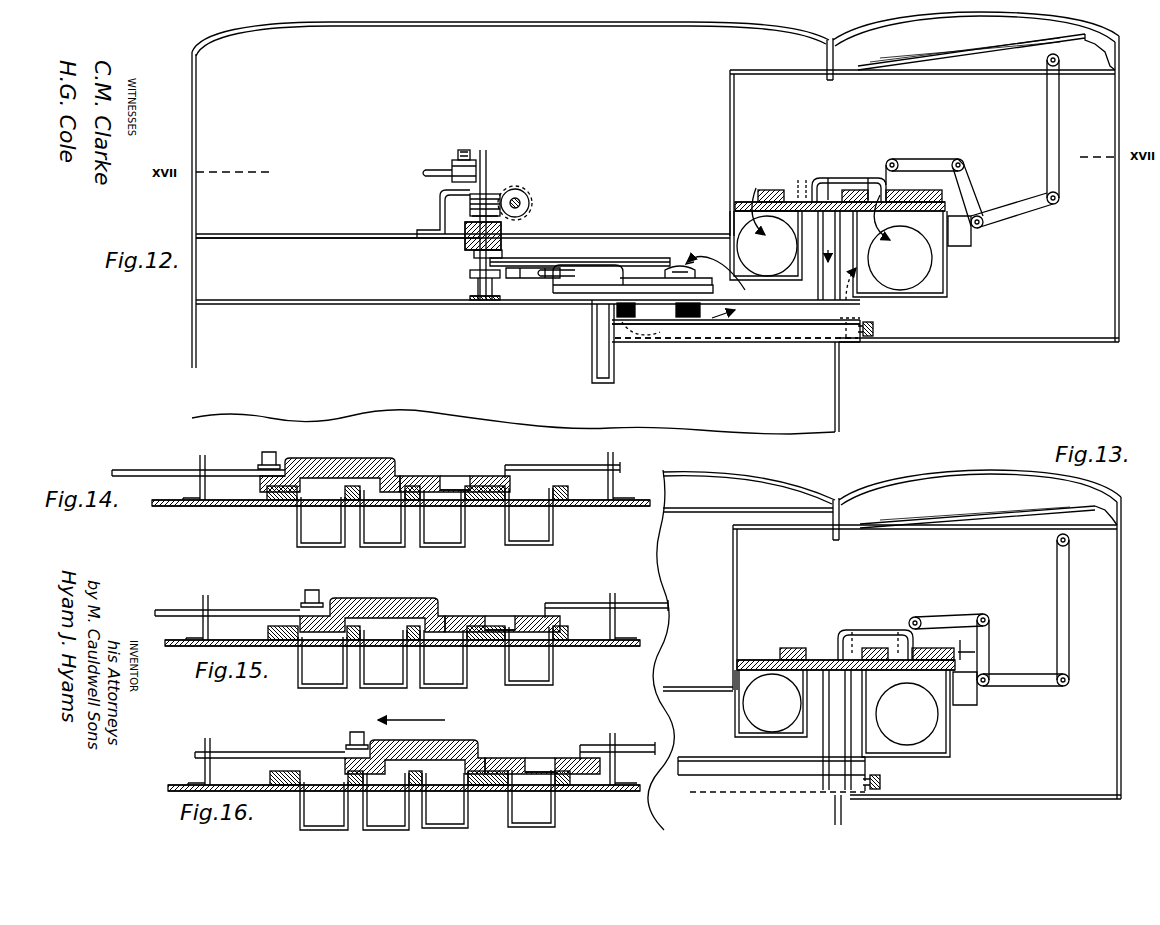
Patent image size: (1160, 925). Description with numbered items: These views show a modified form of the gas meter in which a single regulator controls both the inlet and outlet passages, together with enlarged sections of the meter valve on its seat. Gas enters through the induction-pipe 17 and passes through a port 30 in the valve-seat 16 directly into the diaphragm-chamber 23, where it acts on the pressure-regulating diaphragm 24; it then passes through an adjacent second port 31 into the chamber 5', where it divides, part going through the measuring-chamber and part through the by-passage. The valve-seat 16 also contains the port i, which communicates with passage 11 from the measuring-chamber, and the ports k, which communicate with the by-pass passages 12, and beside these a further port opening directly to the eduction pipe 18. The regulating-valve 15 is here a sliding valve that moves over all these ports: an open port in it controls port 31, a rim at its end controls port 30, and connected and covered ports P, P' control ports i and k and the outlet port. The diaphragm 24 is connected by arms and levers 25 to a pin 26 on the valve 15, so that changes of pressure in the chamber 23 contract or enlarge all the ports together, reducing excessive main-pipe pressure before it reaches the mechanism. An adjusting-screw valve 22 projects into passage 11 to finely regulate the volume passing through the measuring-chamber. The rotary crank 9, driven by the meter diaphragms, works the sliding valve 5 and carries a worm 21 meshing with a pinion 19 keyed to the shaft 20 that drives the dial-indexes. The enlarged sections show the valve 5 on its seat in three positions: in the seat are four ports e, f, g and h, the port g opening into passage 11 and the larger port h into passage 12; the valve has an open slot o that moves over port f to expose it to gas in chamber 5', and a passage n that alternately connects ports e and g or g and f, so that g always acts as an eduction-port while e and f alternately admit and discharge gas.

In FIG. 12, the sliding valve 5 is at (641, 274).
In FIG. 12, the chamber 5' is at (338, 257).
In FIG. 12, the rotary crank 9 is at (529, 282).
In FIG. 12, the passage 11 is at (713, 340).
In FIG. 13, the passage 11 is at (780, 778).
In FIG. 12, the passage 12 is at (775, 326).
In FIG. 13, the passage 12 is at (814, 765).
In FIG. 12, the regulating-valve 15 is at (846, 176).
In FIG. 13, the regulating-valve 15 is at (873, 628).
In FIG. 12, the valve-seat 16 is at (733, 208).
In FIG. 12, the induction-pipe 17 is at (766, 245).
In FIG. 13, the induction-pipe 17 is at (771, 703).
In FIG. 12, the eduction pipe 18 is at (900, 246).
In FIG. 13, the eduction pipe 18 is at (906, 713).
In FIG. 12, the pinion 19 is at (535, 203).
In FIG. 12, the shaft 20 is at (499, 186).
In FIG. 12, the worm 21 is at (543, 225).
In FIG. 12, the valve 22 is at (878, 329).
In FIG. 13, the valve 22 is at (884, 783).
In FIG. 12, the chamber 23 is at (922, 153).
In FIG. 12, the diaphragm 24 is at (975, 66).
In FIG. 13, the diaphragm 24 is at (993, 530).
In FIG. 12, the arms and levers 25 is at (1020, 207).
In FIG. 12, the pin 26 is at (925, 161).
In FIG. 12, the port 30 is at (768, 201).
In FIG. 12, the port 31 is at (805, 177).
In FIG. 12, the covered port P is at (822, 172).
In FIG. 13, the covered port P is at (842, 628).
In FIG. 12, the covered port P' is at (876, 172).
In FIG. 13, the covered port P' is at (904, 628).
In FIG. 12, the port k is at (860, 314).
In FIG. 12, the port i is at (847, 344).
In FIG. 14, the passage n is at (335, 470).
In FIG. 15, the passage n is at (375, 612).
In FIG. 14, the open slot o is at (450, 472).
In FIG. 15, the open slot o is at (492, 614).
In FIG. 16, the open slot o is at (538, 756).
In FIG. 14, the port e is at (321, 522).
In FIG. 15, the port e is at (322, 662).
In FIG. 16, the port e is at (324, 806).
In FIG. 14, the port g is at (382, 518).
In FIG. 15, the port g is at (383, 659).
In FIG. 16, the port g is at (386, 801).
In FIG. 14, the port f is at (442, 518).
In FIG. 15, the port f is at (443, 659).
In FIG. 16, the port f is at (445, 800).
In FIG. 14, the port h is at (529, 516).
In FIG. 15, the port h is at (529, 656).
In FIG. 16, the port h is at (531, 798).